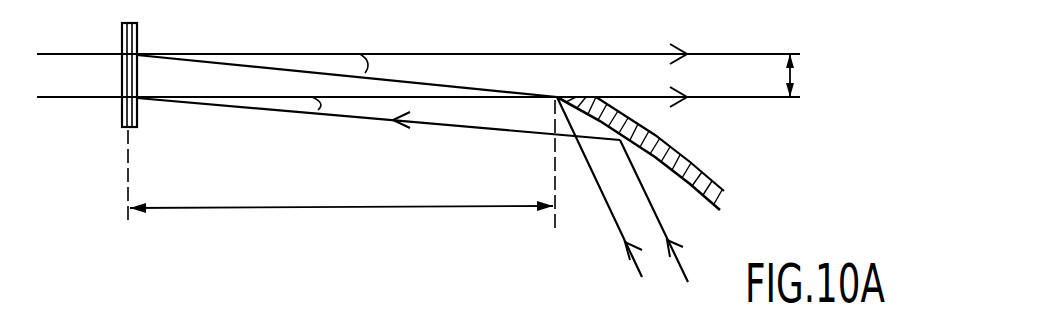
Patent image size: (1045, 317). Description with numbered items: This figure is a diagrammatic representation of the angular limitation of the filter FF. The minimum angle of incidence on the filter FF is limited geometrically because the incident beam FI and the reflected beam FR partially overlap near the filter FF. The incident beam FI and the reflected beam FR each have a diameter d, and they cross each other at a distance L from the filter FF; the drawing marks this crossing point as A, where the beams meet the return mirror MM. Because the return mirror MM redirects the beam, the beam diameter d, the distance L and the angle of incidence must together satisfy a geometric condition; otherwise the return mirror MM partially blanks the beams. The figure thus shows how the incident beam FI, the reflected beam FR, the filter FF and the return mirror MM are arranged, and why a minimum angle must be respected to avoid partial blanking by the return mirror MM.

The filter FF is at (120, 116).
The reflected beam FR is at (716, 47).
The return mirror MM is at (683, 162).
The incident beam FI is at (643, 257).
The point of incidence on mirror A is at (555, 208).
The distance from the filter L is at (340, 177).
The beam diameter d is at (799, 75).